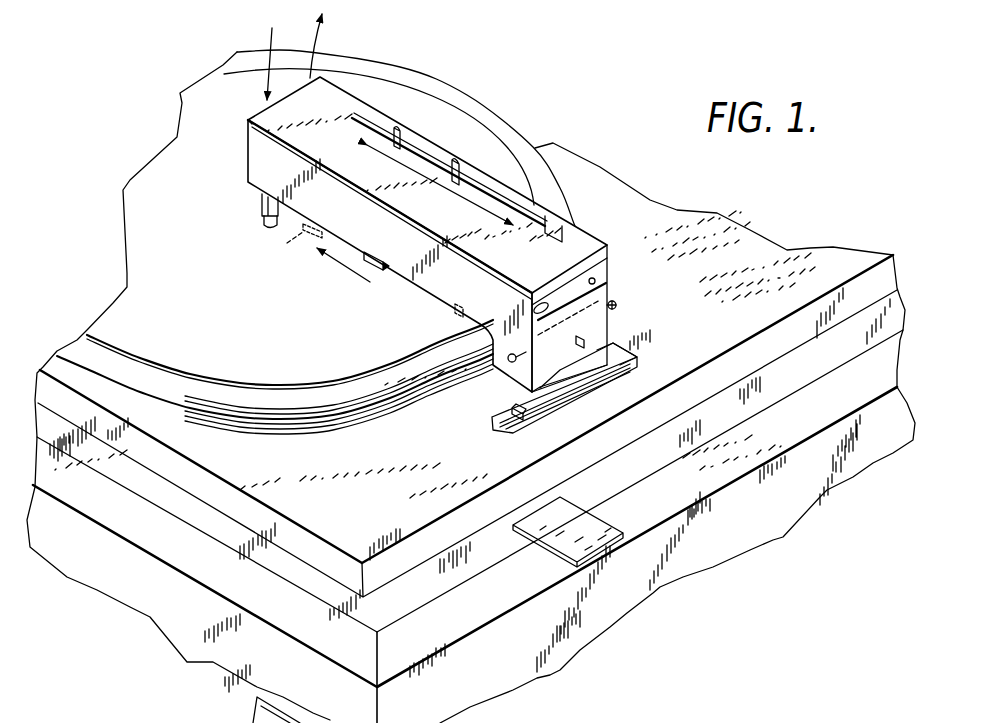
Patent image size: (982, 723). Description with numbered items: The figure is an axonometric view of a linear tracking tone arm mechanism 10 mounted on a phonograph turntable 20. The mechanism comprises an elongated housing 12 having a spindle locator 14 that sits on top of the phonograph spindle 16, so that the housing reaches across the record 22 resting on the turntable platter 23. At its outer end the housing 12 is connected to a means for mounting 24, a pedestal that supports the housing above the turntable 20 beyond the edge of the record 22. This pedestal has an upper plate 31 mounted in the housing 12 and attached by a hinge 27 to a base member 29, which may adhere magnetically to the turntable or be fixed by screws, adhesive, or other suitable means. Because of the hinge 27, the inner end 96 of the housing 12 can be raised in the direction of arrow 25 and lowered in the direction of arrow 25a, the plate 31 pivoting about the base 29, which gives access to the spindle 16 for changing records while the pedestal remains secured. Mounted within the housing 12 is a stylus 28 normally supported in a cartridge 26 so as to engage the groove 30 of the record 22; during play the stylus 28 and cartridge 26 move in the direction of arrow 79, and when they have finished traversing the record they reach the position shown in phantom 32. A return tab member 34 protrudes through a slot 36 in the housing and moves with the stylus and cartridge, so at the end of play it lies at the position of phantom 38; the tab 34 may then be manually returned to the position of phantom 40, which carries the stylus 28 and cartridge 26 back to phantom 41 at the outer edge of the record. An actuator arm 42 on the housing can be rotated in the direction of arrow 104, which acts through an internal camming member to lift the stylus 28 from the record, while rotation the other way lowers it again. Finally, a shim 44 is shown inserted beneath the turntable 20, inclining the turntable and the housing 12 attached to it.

The linear tracking tone arm mechanism 10 is at (374, 105).
The housing 12 is at (253, 157).
The spindle locator 14 is at (263, 200).
The phonograph spindle 16 is at (264, 222).
The turntable 20 is at (396, 517).
The record 22 is at (326, 258).
The turntable platter 23 is at (335, 422).
The means for mounting 24 is at (597, 352).
The arrow 25 is at (321, 30).
The arrow 25a is at (262, 34).
The cartridge 26 is at (367, 256).
The hinge 27 is at (522, 393).
The stylus 28 is at (368, 271).
The base member 29 is at (578, 380).
The groove 30 is at (391, 360).
The upper plate 31 is at (609, 336).
The phantom 32 is at (287, 244).
The return tab member 34 is at (457, 163).
The slot 36 is at (432, 163).
The phantom 38 is at (400, 134).
The phantom 40 is at (553, 217).
The phantom 41 is at (560, 230).
The actuator arm 42 is at (552, 270).
The shim 44 is at (600, 532).
The arrow 79 is at (340, 265).
The end 96 is at (263, 113).
The arrow 104 is at (536, 306).